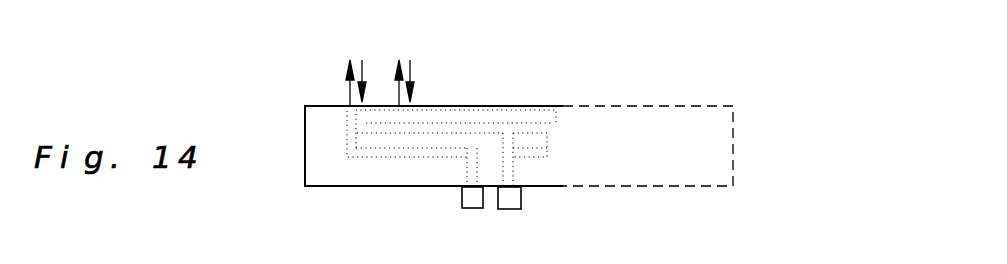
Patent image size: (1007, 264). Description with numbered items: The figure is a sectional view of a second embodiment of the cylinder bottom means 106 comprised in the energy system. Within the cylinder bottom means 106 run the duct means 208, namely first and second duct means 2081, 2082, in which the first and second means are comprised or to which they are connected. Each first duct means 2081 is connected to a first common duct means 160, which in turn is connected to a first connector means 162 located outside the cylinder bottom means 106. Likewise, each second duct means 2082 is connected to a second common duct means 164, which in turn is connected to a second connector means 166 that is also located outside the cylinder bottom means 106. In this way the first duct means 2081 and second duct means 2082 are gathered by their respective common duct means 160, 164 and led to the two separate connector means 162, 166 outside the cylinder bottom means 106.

The cylinder bottom means 106 is at (733, 142).
The first common duct means 160 is at (372, 158).
The first connector means 162 is at (470, 202).
The second common duct means 164 is at (550, 130).
The second connector means 166 is at (513, 198).
The duct means 208 is at (357, 80).
The first duct means 2081 is at (347, 128).
The second duct means 2082 is at (413, 118).